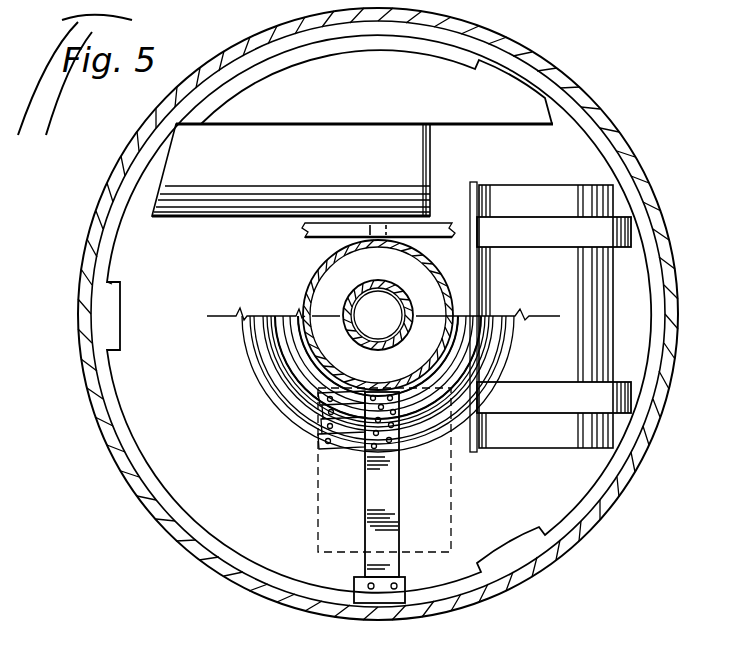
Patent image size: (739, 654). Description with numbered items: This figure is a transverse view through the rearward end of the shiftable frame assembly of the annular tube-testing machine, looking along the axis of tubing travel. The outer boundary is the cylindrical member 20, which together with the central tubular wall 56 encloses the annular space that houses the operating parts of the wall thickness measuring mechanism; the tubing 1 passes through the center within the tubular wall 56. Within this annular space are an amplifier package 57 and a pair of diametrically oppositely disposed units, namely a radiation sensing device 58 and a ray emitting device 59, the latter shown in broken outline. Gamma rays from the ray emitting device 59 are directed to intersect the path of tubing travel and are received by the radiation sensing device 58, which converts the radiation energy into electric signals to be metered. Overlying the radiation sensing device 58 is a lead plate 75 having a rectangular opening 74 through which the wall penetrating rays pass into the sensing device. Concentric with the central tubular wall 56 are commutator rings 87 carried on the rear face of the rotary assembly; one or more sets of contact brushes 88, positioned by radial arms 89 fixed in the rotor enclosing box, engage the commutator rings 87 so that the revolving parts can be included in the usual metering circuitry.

The tube 1 is at (407, 312).
The cylindrical member 20 is at (108, 190).
The central tubular wall 56 is at (310, 300).
The amplifier package 57 is at (576, 291).
The radiation sensing device 58 is at (345, 140).
The ray emitting device 59 is at (318, 494).
The rectangular opening 74 is at (366, 229).
The lead plate 75 is at (303, 231).
The commutator rings 87 is at (262, 362).
The contact brushes 88 is at (347, 425).
The radial arms 89 is at (388, 494).